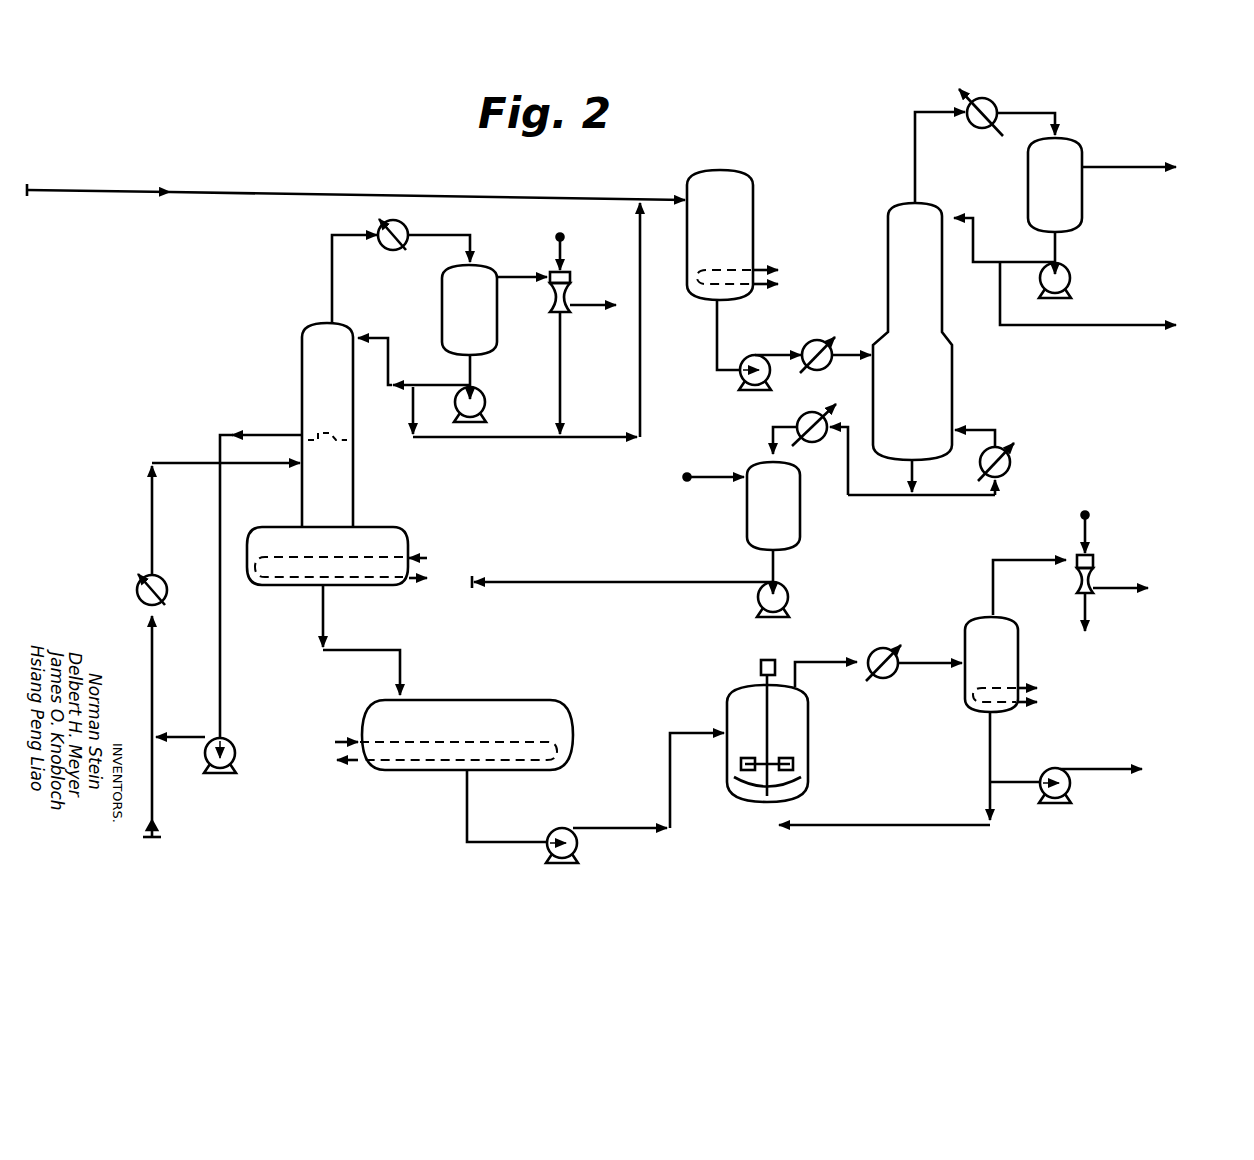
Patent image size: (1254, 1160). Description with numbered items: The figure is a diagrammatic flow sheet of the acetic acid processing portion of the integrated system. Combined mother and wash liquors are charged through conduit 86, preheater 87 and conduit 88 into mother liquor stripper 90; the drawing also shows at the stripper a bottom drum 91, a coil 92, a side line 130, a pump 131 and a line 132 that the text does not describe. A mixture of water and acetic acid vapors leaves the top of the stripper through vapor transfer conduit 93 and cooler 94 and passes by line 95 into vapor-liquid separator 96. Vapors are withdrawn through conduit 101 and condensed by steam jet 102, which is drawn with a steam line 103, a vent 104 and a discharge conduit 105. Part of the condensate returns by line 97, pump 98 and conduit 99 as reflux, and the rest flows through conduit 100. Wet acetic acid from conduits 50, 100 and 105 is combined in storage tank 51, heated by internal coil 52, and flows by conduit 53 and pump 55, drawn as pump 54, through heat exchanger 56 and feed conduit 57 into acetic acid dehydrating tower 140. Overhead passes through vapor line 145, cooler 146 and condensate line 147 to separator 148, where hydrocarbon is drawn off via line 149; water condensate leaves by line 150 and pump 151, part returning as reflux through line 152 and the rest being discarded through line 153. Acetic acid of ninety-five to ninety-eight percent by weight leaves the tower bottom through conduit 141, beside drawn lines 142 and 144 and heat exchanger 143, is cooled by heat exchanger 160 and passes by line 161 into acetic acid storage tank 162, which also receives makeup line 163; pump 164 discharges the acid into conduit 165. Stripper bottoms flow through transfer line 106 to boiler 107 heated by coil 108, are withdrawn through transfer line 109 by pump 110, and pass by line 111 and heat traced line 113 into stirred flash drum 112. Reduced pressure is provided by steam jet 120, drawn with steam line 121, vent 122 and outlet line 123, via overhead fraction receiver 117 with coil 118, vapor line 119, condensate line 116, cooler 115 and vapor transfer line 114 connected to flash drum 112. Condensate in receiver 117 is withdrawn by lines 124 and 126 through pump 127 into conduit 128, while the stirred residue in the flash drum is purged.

The conduit 50 is at (153, 188).
The wet acetic acid storage tank 51 is at (730, 218).
The internal coil 52 is at (733, 266).
The conduit 53 is at (715, 333).
The pump 54 is at (737, 379).
The pump 55 is at (770, 353).
The heat exchanger 56 is at (817, 340).
The feed conduit 57 is at (853, 353).
The conduit 86 is at (154, 654).
The preheater 87 is at (136, 588).
The conduit 88 is at (154, 495).
The mother liquor stripper 90 is at (232, 377).
The stripper bottom reboiler drum 91 is at (392, 552).
The stripper internal coil 92 is at (345, 436).
The vapor transfer conduit 93 is at (330, 270).
The cooler 94 is at (408, 225).
The condensate line 95 is at (472, 250).
The vapor-liquid separator 96 is at (480, 304).
The line 97 is at (475, 373).
The pump 98 is at (486, 404).
The conduit 99 is at (390, 358).
The conduit 100 is at (467, 440).
The conduit 101 is at (516, 275).
The steam jet 102 is at (573, 280).
The steam line 103 is at (565, 252).
The vent outlet 104 is at (578, 308).
The conduit 105 is at (562, 383).
The transfer line 106 is at (325, 625).
The boiler 107 is at (492, 700).
The coil 108 is at (368, 742).
The transfer line 109 is at (500, 841).
The pump 110 is at (578, 851).
The line to mixing tank 111 is at (668, 798).
The stirred flash drum 112 is at (725, 706).
The heat traced line 113 is at (793, 760).
The vapor transfer line 114 is at (811, 661).
The cooler 115 is at (879, 647).
The condensate line 116 is at (915, 665).
The overhead fraction receiver 117 is at (1004, 656).
The heating coil 118 is at (1018, 705).
The vapor line 119 is at (991, 583).
The steam jet 120 is at (1096, 562).
The steam line 121 is at (1083, 536).
The vent outlet 122 is at (1104, 592).
The line to mother liquor surge 123 is at (1083, 609).
The line 124 is at (988, 742).
The line 126 is at (1011, 781).
The pump 127 is at (1072, 795).
The conduit 128 is at (1086, 772).
The stripper side draw line 130 is at (262, 435).
The pump 131 is at (237, 750).
The pump discharge line 132 is at (188, 735).
The acetic acid dehydrating tower 140 is at (930, 272).
The conduit 141 is at (910, 476).
The reboiler circulation line 142 is at (962, 497).
The reboiler 143 is at (1012, 461).
The reboiler return line 144 is at (975, 430).
The tower overhead line 145 is at (913, 157).
The cooler 146 is at (958, 133).
The condensate line 147 is at (1028, 113).
The separator 148 is at (1026, 178).
The line 149 is at (1106, 170).
The decanter bottom line 150 is at (1058, 249).
The pump 151 is at (1071, 282).
The reflux line 152 is at (1015, 260).
The water outlet line 153 is at (998, 298).
The heat exchanger 160 is at (824, 407).
The line to acetic acid storage 161 is at (771, 438).
The acetic acid storage tank 162 is at (786, 501).
The makeup acetic acid line 163 is at (709, 475).
The pump 164 is at (790, 597).
The conduit 165 is at (553, 585).